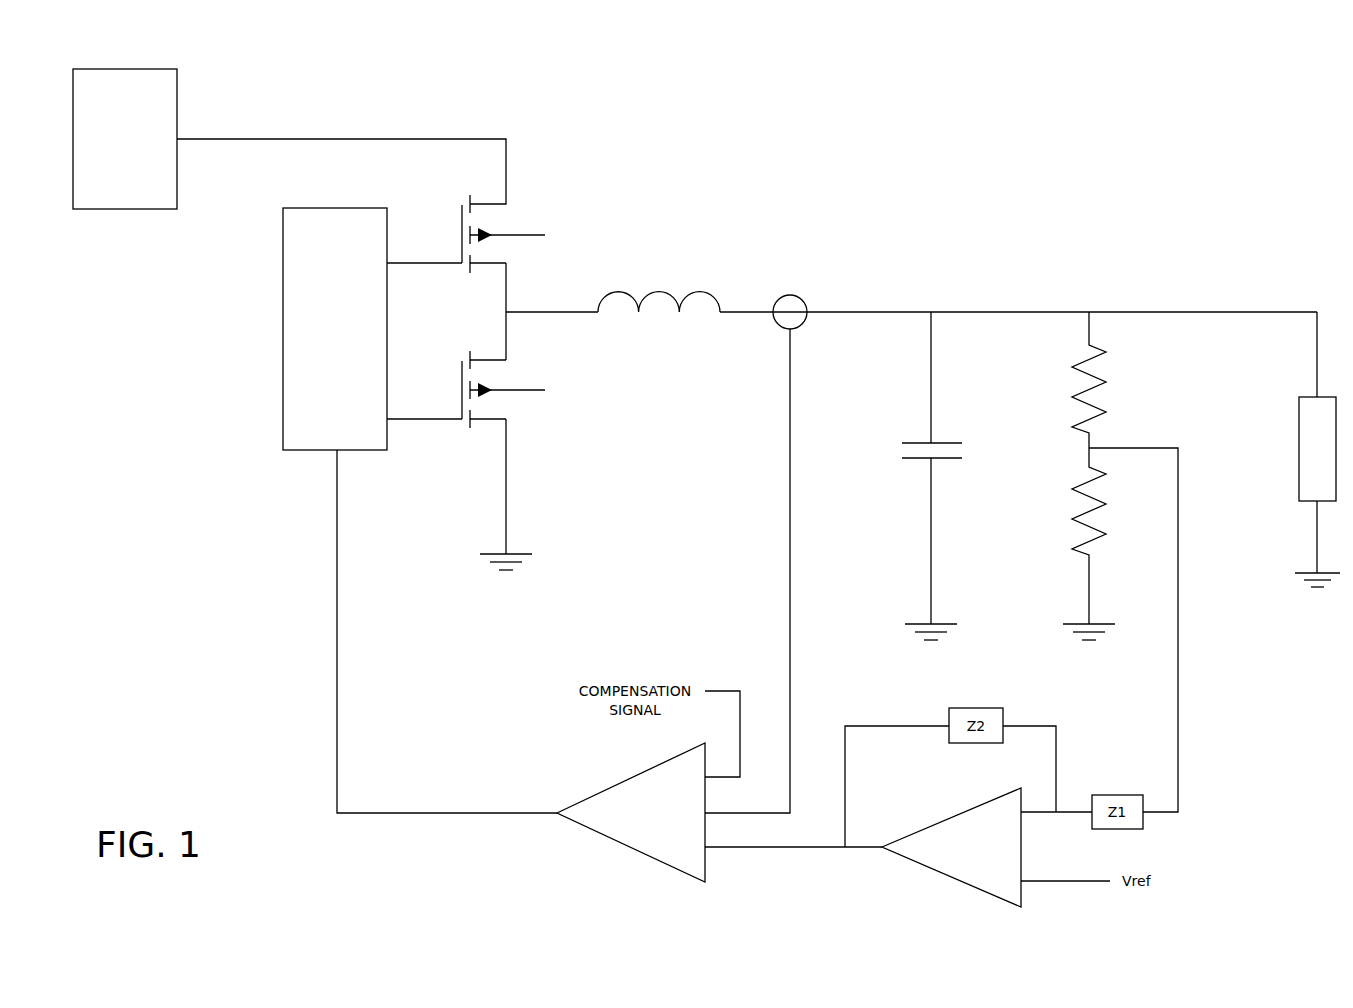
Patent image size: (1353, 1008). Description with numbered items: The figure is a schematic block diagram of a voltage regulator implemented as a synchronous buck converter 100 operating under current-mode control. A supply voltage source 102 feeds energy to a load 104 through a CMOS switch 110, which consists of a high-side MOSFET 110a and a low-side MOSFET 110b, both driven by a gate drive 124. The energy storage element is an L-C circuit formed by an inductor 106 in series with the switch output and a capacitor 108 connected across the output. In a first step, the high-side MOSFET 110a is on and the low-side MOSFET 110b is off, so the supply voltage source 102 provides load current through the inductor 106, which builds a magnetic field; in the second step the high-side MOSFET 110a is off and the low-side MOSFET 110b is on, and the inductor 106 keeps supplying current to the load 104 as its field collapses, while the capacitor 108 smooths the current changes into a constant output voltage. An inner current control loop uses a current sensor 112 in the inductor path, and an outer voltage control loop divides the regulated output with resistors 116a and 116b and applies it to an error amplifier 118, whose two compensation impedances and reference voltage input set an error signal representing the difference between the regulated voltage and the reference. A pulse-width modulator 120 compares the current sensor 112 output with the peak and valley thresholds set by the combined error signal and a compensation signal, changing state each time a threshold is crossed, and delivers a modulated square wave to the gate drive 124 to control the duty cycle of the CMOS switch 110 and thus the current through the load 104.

The buck converter 100 is at (850, 93).
The supply voltage source 102 is at (112, 173).
The load 104 is at (1259, 457).
The inductor 106 is at (672, 284).
The capacitor 108 is at (892, 460).
The CMOS switch 110 is at (489, 318).
The high-side MOSFET 110a is at (535, 232).
The low-side MOSFET 110b is at (538, 387).
The current sensor 112 is at (805, 286).
The resistor 116a is at (1064, 388).
The resistor 116b is at (1072, 511).
The error amplifier 118 is at (962, 879).
The pulse-width modulator 120 is at (632, 849).
The gate drive 124 is at (322, 356).